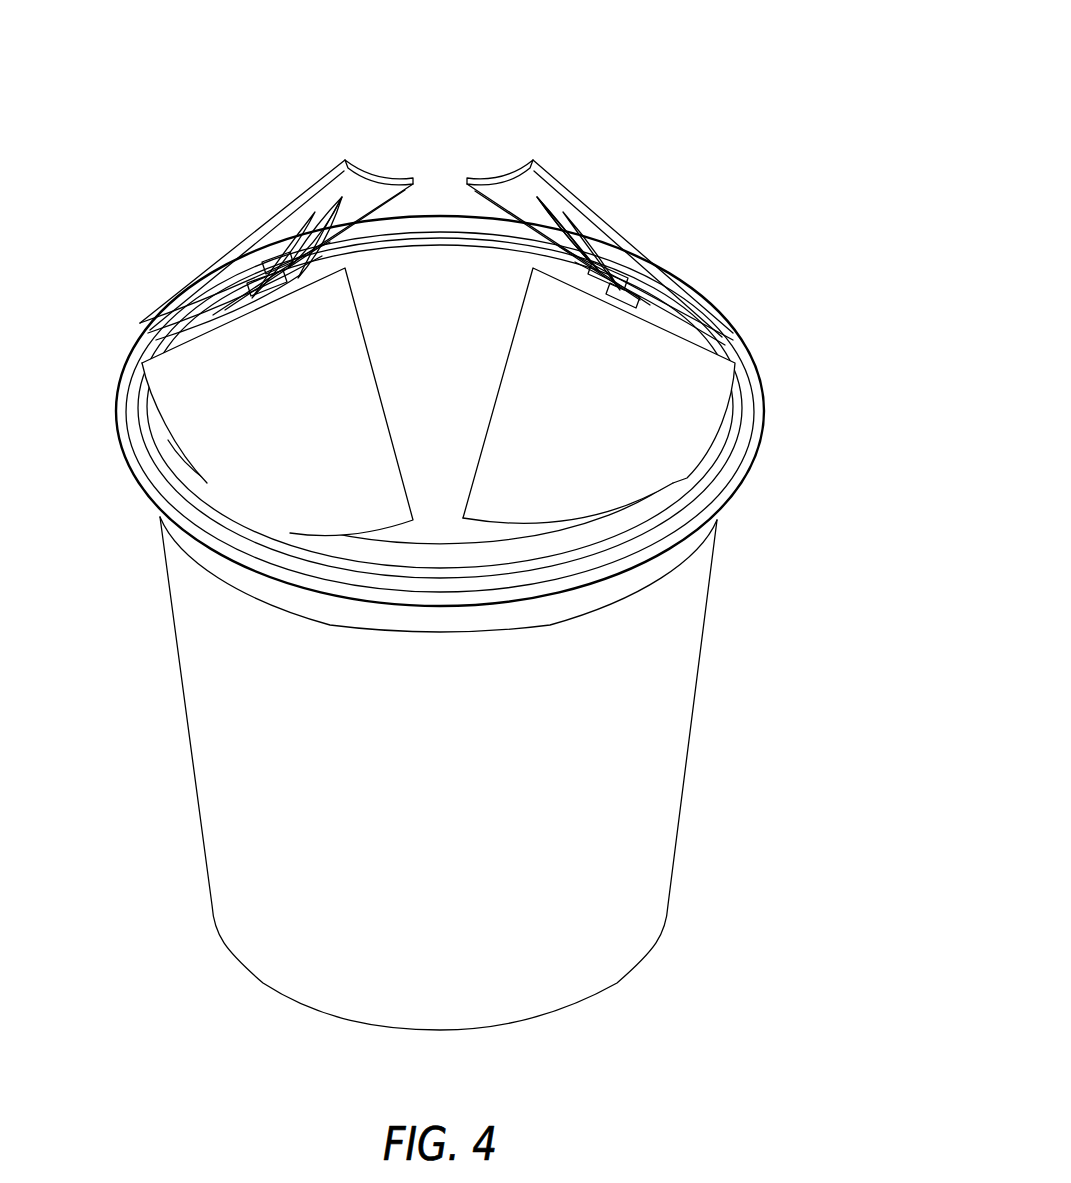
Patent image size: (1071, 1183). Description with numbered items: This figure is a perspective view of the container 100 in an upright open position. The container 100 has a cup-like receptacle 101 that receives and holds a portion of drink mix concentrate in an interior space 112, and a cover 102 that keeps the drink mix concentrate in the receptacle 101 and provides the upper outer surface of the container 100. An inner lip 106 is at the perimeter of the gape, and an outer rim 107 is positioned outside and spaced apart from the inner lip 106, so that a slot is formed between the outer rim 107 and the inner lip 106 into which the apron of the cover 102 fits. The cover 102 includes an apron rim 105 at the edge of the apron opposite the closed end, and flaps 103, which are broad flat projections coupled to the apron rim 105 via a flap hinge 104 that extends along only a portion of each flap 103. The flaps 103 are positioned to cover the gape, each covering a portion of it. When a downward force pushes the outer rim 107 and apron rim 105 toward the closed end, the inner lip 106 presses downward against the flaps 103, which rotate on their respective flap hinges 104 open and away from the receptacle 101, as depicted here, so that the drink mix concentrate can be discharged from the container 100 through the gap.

The container 100 is at (609, 80).
The receptacle 101 is at (657, 748).
The cover 102 is at (680, 333).
The flaps 103 is at (504, 172).
The flap hinge 104 is at (643, 453).
The apron rim 105 is at (432, 232).
The inner lip 106 is at (170, 342).
The outer rim 107 is at (743, 407).
The interior space 112 is at (425, 385).